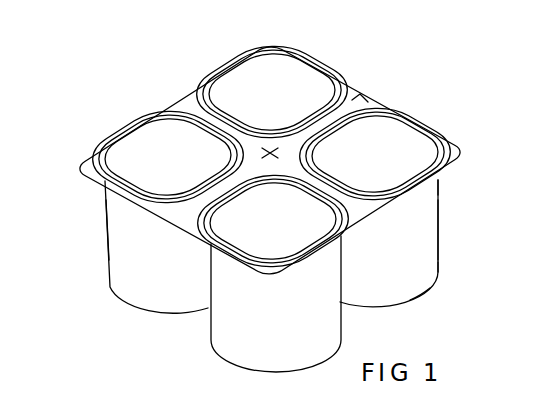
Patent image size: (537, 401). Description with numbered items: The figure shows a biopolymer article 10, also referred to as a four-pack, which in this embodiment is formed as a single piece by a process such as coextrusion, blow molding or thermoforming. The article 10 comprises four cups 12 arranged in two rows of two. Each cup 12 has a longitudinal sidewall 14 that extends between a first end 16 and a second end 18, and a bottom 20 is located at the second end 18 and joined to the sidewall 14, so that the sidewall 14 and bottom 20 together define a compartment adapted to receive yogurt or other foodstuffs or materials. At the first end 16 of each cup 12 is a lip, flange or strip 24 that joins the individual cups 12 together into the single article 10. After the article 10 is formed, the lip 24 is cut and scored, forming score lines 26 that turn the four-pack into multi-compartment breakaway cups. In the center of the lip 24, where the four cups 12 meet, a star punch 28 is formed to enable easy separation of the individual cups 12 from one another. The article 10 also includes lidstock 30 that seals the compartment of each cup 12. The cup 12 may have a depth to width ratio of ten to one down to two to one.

The biopolymer article 10 is at (371, 60).
The cup 12 is at (177, 271).
The longitudinal sidewall 14 is at (121, 250).
The first end 16 is at (437, 181).
The second end 18 is at (439, 272).
The bottom 20 is at (413, 300).
The lip 24 is at (271, 43).
The score line 26 is at (362, 96).
The star punch 28 is at (267, 143).
The lidstock 30 is at (413, 155).